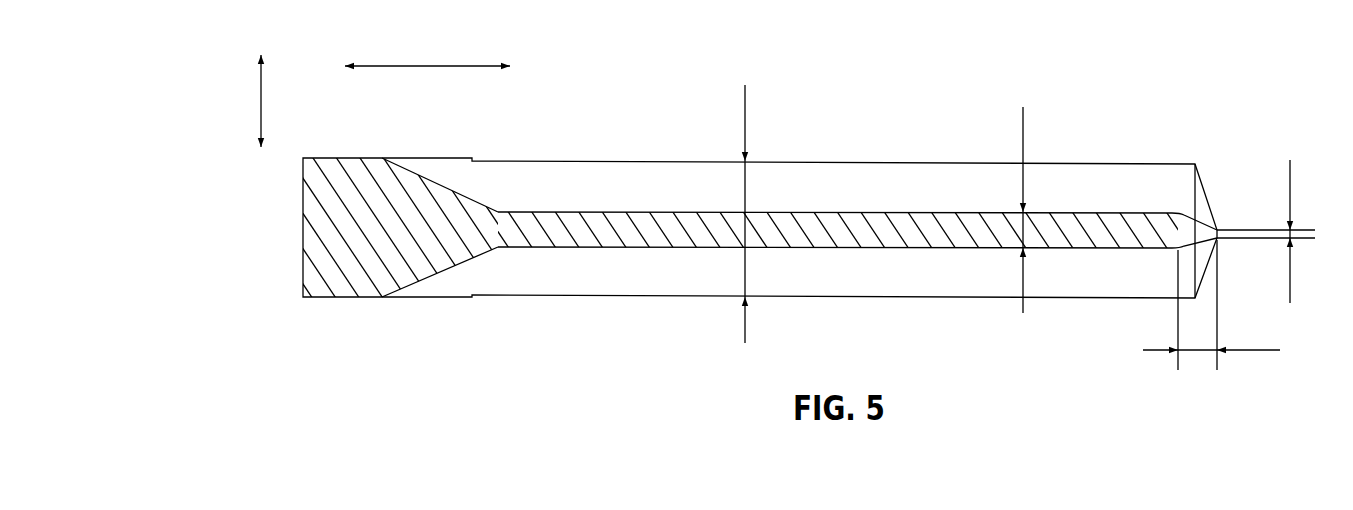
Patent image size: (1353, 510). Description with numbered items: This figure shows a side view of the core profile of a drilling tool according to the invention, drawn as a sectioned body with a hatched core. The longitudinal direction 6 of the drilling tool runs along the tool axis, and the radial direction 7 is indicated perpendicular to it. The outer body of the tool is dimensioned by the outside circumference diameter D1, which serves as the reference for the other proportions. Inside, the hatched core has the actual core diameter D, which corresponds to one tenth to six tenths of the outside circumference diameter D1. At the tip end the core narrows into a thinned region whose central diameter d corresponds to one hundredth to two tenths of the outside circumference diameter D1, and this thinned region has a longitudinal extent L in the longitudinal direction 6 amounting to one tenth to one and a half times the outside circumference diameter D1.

The longitudinal direction 6 is at (435, 66).
The radial direction 7 is at (262, 101).
The outside circumference diameter D1 is at (745, 116).
The core diameter D is at (1023, 126).
The central diameter of the thinned region d is at (1292, 190).
The longitudinal extent of the thinned region L is at (1253, 350).